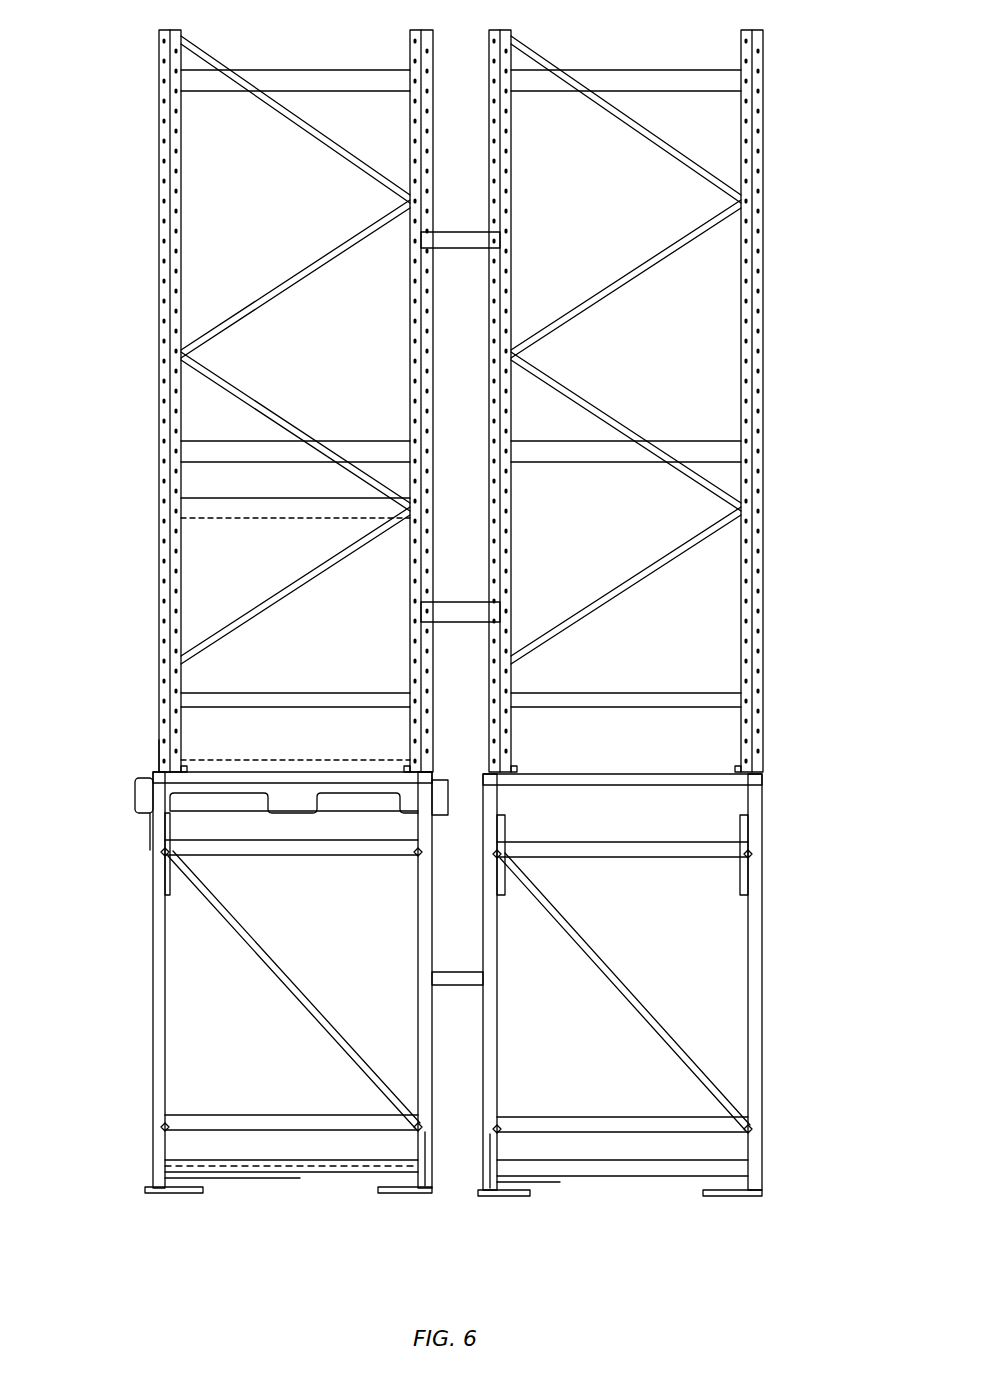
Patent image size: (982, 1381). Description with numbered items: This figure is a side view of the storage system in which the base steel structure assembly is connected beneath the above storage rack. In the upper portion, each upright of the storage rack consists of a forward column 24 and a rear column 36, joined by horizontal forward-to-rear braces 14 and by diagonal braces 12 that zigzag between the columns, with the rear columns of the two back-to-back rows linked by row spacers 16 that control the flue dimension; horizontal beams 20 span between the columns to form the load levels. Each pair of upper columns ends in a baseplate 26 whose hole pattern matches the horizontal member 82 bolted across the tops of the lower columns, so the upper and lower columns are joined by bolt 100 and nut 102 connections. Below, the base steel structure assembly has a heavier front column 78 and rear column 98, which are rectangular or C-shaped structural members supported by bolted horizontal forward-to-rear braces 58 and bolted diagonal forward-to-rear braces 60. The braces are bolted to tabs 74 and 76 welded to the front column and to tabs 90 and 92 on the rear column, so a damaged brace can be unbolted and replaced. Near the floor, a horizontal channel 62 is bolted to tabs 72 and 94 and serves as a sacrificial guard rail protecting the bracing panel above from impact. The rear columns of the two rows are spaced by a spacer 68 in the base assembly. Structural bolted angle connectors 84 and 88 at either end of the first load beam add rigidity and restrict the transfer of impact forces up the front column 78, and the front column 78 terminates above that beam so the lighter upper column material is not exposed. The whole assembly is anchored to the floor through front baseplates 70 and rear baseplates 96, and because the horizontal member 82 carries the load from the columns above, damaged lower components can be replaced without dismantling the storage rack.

The diagonal brace 12 is at (215, 52).
The horizontal forward-to-rear braces 14 is at (218, 702).
The row spacers 16 is at (467, 238).
The beam 20 is at (393, 80).
The forward column 24 is at (165, 240).
The baseplate 26 is at (186, 768).
The rear column 36 is at (410, 300).
The horizontal forward-to-rear braces 58 is at (222, 848).
The diagonal forward-to-rear braces 60 is at (282, 982).
The horizontal channel 62 is at (285, 1188).
The base frame spacer 68 is at (470, 980).
The baseplates 70 is at (192, 1195).
The tab 72 is at (180, 1172).
The tab 74 is at (160, 1120).
The tab 76 is at (163, 855).
The front column 78 is at (153, 965).
The horizontal member 82 is at (160, 745).
The structural bolted angle connector 84 is at (412, 892).
The structural bolted angle connector 88 is at (166, 880).
The tab 90 is at (412, 855).
The tab 92 is at (410, 1115).
The tab 94 is at (300, 1173).
The baseplates 96 is at (278, 1180).
The rear column 98 is at (413, 1150).
The bolt 100 is at (150, 838).
The nut 102 is at (135, 800).